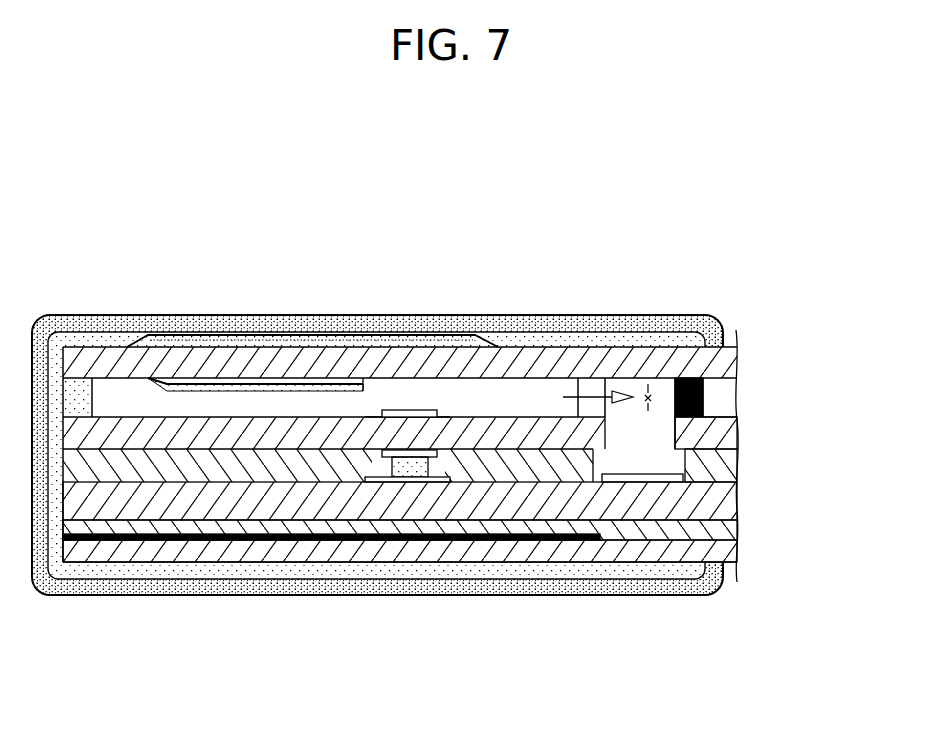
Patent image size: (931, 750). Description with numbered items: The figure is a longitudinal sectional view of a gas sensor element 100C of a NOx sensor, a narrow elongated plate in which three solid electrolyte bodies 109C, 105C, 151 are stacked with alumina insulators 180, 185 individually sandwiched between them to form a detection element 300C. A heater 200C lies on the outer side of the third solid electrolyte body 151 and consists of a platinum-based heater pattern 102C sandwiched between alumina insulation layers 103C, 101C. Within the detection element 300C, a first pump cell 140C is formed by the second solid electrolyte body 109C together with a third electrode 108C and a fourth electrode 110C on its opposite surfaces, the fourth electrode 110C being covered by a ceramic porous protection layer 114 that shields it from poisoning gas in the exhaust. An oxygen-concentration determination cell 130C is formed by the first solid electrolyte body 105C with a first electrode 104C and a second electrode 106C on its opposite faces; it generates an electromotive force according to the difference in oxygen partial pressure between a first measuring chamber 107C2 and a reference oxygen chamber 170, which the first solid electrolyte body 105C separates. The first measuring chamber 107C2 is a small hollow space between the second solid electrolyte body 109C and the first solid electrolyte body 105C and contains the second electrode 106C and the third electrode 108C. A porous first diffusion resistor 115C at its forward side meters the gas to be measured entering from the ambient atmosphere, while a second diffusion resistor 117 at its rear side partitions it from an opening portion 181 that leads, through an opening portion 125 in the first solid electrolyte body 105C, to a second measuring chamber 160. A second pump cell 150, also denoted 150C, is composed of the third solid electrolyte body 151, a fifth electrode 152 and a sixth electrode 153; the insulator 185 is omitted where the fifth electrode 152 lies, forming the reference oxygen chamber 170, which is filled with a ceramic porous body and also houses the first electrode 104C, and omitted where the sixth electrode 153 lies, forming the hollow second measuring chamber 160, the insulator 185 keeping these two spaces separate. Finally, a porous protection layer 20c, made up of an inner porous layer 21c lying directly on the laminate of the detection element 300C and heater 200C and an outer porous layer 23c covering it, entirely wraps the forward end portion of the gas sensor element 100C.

The gas sensor element 100C is at (621, 230).
The second pump cell 150C is at (116, 205).
The porous protection layer 20c is at (163, 667).
The inner porous layer 21c is at (62, 580).
The outer porous layer 23c is at (131, 576).
The detection element 300C is at (812, 348).
The porous protection layer 114 is at (150, 345).
The first diffusion resistor 115C is at (93, 398).
The first pump cell 140C is at (335, 246).
The third electrode 108C is at (193, 392).
The fourth electrode 110C is at (247, 384).
The second solid electrolyte body 109C is at (292, 386).
The first measuring chamber 107C2 is at (188, 398).
The oxygen-concentration determination cell 130C is at (537, 261).
The first electrode 104C is at (379, 428).
The second electrode 106C is at (413, 409).
The first solid electrolyte body 105C is at (500, 415).
The second diffusion resistor 117 is at (577, 379).
The second measuring chamber 160 is at (647, 383).
The insulator 180 is at (737, 396).
The opening portion 181 is at (689, 379).
The opening portion 125 is at (674, 433).
The insulator 185 is at (737, 467).
The reference oxygen chamber 170 is at (348, 483).
The heater pattern 102C is at (410, 462).
The second pump cell 150 is at (697, 634).
The fifth electrode 152 is at (449, 481).
The sixth electrode 153 is at (596, 482).
The third solid electrolyte body 151 is at (680, 507).
The heater 200C is at (812, 525).
The insulation layer 103C is at (737, 533).
The insulation layer 101C is at (737, 563).